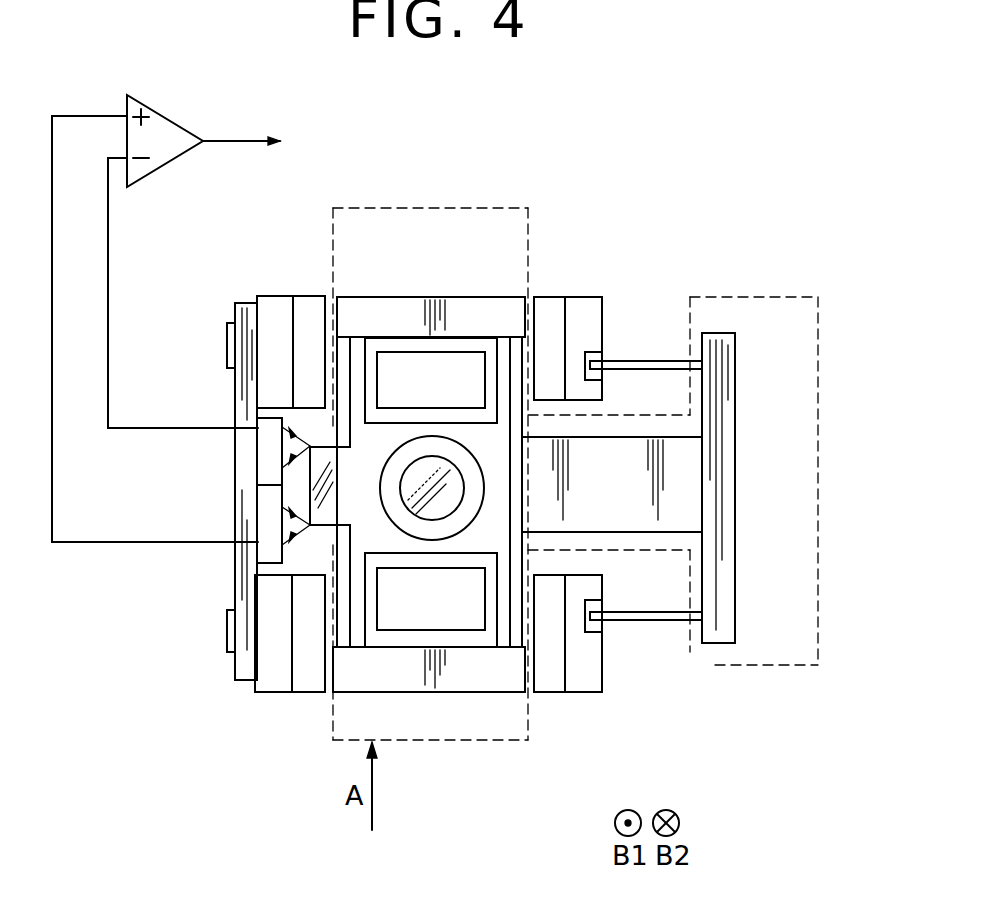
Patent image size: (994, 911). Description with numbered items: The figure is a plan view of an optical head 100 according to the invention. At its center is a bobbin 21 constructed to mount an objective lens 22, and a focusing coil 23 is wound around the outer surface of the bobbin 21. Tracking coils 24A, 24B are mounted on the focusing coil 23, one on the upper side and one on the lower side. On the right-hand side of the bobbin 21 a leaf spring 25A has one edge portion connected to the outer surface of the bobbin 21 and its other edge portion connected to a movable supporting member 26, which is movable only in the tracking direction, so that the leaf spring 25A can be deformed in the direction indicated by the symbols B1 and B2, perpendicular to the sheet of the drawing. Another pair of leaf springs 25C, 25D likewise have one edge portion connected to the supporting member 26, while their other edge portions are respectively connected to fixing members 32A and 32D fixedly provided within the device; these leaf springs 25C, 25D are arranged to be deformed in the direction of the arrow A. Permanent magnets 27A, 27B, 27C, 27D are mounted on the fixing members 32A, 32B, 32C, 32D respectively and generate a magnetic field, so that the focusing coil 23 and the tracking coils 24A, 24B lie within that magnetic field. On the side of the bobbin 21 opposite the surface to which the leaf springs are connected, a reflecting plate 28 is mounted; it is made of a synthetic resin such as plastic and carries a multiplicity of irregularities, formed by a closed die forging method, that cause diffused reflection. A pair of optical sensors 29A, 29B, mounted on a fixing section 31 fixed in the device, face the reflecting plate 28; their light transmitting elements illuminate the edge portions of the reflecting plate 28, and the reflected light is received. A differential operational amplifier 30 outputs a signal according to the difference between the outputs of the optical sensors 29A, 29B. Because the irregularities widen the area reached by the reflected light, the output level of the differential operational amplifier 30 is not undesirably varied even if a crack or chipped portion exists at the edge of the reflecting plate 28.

The optical head 100 is at (682, 211).
The bobbin 21 is at (480, 440).
The objective lens 22 is at (450, 495).
The focusing coil 23 is at (348, 350).
The tracking coil 24A is at (348, 300).
The tracking coil 24B is at (378, 668).
The leaf spring 25A is at (680, 487).
The leaf spring 25C is at (655, 358).
The leaf spring 25D is at (665, 625).
The movable supporting member 26 is at (725, 420).
The permanent magnet 27A is at (550, 305).
The permanent magnet 27B is at (315, 300).
The permanent magnet 27C is at (310, 672).
The permanent magnet 27D is at (550, 690).
The reflecting plate 28 is at (313, 510).
The optical sensor 29A is at (270, 458).
The optical sensor 29B is at (262, 518).
The differential operational amplifier 30 is at (178, 122).
The fixing section 31 is at (235, 310).
The fixing member 32A is at (585, 305).
The fixing member 32B is at (278, 300).
The fixing member 32C is at (273, 665).
The fixing member 32D is at (585, 655).